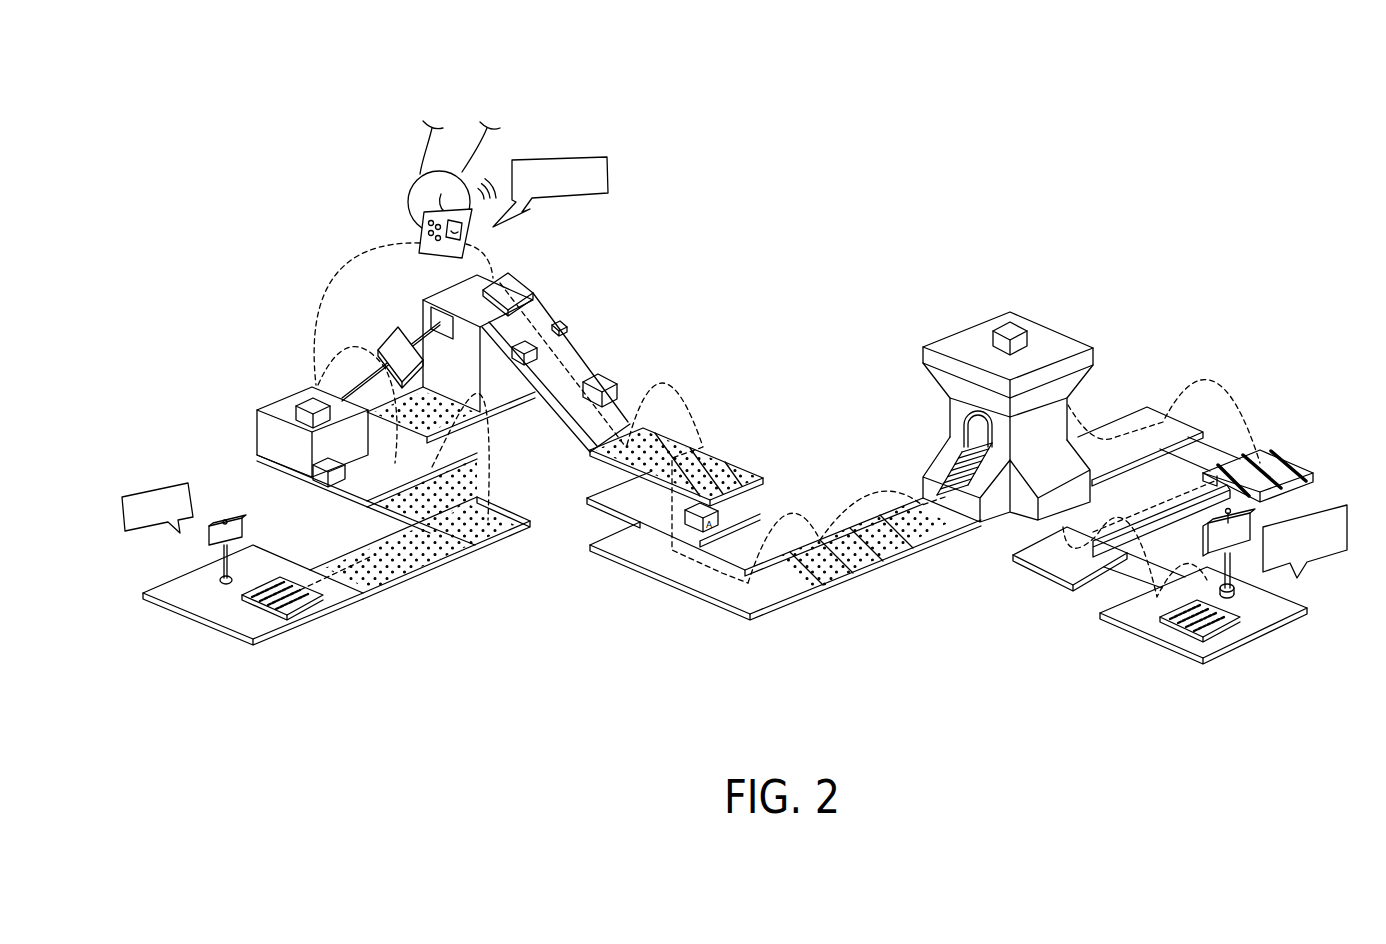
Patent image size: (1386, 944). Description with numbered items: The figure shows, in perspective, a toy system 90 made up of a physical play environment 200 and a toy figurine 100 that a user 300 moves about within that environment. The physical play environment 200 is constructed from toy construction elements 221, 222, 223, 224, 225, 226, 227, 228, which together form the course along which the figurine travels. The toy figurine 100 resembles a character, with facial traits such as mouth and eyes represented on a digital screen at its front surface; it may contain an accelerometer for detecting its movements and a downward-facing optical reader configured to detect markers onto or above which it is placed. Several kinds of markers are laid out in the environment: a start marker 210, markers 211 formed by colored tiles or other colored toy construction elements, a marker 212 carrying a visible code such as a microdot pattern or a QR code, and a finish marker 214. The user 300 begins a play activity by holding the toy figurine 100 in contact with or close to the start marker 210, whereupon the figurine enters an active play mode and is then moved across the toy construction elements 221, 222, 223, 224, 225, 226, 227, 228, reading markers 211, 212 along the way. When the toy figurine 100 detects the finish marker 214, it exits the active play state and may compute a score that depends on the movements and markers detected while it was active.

The toy system 90 is at (235, 160).
The toy figurine 100 is at (420, 243).
The physical play environment 200 is at (1192, 164).
The start marker 210 is at (310, 598).
The marker 211 is at (366, 554).
The marker 212 is at (310, 390).
The finish marker 214 is at (1180, 625).
The toy construction element 221 is at (215, 610).
The toy construction element 222 is at (422, 575).
The toy construction element 223 is at (315, 476).
The toy construction element 224 is at (268, 436).
The toy construction element 225 is at (500, 400).
The toy construction element 226 is at (578, 352).
The toy construction element 227 is at (648, 557).
The toy construction element 228 is at (1085, 352).
The user 300 is at (433, 149).